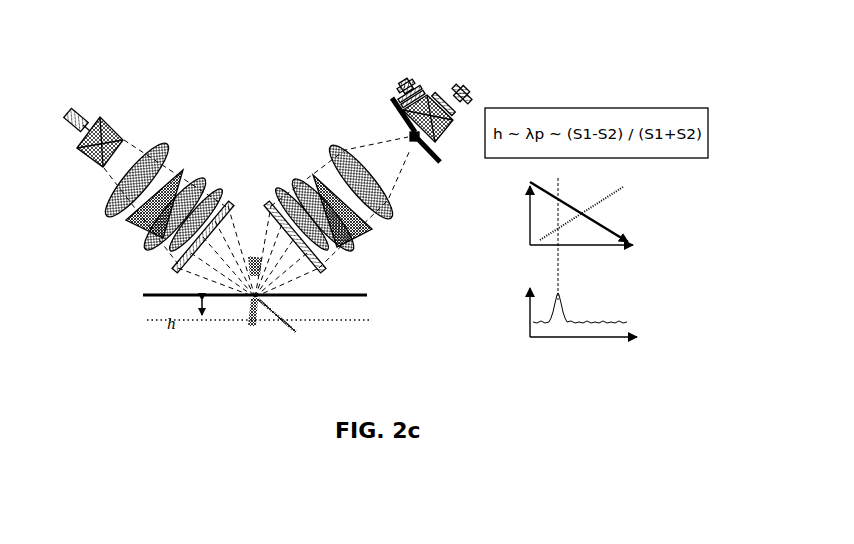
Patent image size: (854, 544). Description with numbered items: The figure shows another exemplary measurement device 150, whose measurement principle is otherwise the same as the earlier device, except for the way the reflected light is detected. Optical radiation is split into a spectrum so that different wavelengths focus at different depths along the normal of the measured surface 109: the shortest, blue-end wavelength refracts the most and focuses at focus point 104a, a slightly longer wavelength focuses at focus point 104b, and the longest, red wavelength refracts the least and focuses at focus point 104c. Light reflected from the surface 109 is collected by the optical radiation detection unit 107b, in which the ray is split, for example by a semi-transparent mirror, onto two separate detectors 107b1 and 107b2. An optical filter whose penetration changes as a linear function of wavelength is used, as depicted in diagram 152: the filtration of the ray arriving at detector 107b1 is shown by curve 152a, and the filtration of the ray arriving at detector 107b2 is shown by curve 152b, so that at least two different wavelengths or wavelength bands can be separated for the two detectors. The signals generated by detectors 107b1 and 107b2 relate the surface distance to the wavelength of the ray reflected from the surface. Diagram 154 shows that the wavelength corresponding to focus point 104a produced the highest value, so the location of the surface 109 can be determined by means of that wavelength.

The measurement device 150 is at (214, 91).
The surface 109 is at (273, 286).
The focus point 104a is at (256, 262).
The focus point 104b is at (558, 322).
The focus point 104c is at (250, 320).
The optical radiation detection unit 107b is at (434, 80).
The detector 107b1 is at (377, 66).
The detector 107b2 is at (489, 74).
The diagram 152 is at (566, 236).
The curve 152a is at (600, 204).
The curve 152b is at (600, 212).
The diagram 154 is at (566, 322).